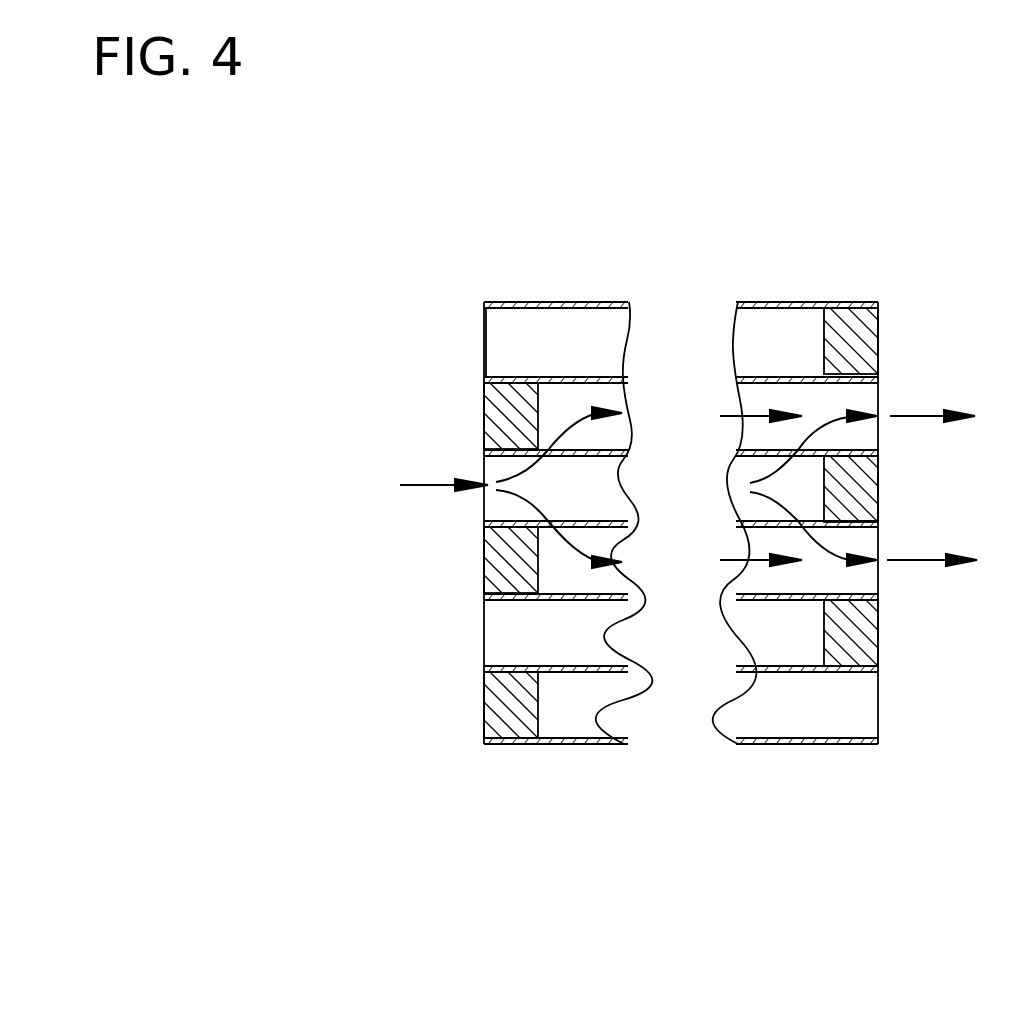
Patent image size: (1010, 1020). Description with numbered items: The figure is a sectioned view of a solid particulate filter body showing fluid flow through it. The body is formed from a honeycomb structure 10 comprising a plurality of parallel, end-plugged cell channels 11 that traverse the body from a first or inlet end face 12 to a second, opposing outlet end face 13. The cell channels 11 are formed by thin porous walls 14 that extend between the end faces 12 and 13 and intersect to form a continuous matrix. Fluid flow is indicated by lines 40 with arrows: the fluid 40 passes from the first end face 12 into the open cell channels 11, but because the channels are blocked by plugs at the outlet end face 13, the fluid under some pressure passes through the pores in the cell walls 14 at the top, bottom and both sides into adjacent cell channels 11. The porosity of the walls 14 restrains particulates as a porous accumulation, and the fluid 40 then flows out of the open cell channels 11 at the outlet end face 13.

The honeycomb structure 10 is at (834, 225).
The cell channels 11 is at (572, 345).
The first end face 12 is at (483, 645).
The second end face 13 is at (877, 710).
The walls 14 is at (503, 305).
The fluid flow 40 is at (925, 415).